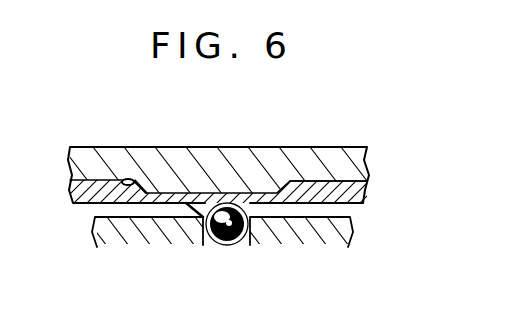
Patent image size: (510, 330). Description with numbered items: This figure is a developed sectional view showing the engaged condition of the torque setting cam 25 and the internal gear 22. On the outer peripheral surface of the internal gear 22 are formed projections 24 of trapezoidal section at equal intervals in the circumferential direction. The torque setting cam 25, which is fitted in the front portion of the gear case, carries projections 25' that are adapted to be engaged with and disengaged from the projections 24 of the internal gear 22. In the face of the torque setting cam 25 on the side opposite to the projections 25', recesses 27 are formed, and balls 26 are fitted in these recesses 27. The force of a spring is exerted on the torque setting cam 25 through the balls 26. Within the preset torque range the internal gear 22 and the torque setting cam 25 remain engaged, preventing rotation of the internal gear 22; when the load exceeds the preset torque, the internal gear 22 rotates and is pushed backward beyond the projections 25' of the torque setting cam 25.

The internal gear 22 is at (198, 157).
The projections 24 is at (124, 180).
The torque setting cam 25 is at (222, 226).
The projections 25' is at (328, 158).
The balls 26 is at (225, 246).
The recesses 27 is at (258, 208).